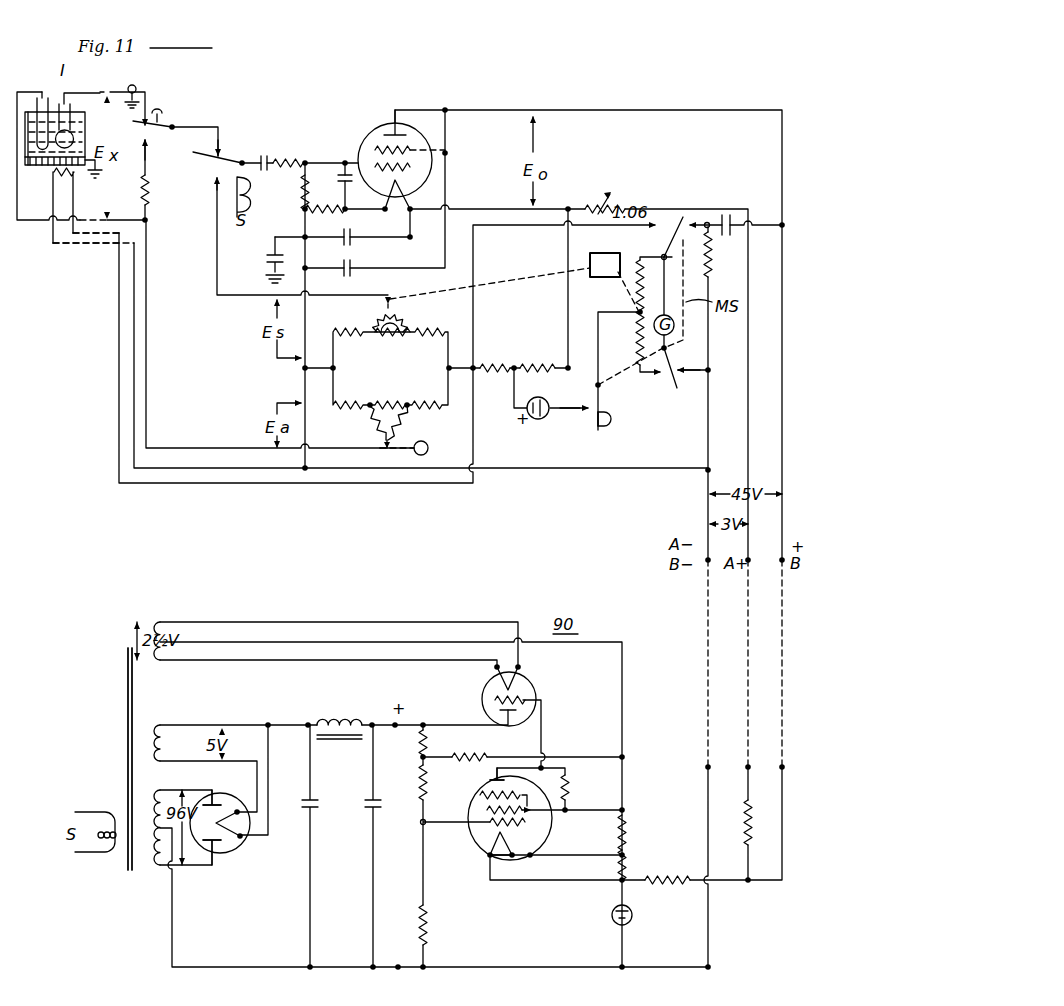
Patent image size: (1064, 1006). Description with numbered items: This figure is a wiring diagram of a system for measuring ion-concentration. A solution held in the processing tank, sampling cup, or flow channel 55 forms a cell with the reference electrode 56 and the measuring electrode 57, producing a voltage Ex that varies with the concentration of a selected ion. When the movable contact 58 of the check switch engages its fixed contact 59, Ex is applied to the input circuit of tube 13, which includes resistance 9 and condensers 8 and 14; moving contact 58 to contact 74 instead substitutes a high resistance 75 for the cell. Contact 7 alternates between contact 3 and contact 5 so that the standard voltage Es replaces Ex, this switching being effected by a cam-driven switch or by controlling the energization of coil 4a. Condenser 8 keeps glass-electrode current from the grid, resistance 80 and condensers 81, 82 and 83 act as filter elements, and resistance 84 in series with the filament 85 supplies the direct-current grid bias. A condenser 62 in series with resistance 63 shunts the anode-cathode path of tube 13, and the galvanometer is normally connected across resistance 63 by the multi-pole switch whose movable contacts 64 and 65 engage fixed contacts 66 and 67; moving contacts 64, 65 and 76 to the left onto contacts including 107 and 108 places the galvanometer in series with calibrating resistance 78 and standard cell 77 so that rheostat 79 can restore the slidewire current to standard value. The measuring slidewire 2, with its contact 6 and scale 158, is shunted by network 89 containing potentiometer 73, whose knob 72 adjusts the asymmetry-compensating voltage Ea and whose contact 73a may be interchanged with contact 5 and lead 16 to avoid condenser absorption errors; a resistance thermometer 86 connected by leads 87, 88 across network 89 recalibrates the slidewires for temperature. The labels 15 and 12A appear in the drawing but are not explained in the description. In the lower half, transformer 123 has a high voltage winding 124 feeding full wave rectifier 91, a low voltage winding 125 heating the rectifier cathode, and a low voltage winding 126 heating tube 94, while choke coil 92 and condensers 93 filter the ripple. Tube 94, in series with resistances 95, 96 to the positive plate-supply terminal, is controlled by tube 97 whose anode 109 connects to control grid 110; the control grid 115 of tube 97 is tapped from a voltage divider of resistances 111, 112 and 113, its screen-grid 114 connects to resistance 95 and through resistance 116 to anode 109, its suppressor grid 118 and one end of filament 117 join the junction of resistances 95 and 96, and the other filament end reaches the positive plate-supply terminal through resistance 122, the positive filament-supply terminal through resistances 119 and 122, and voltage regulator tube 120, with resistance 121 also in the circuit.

The processing tank, sampling cup, or flow channel 55 is at (38, 168).
The reference electrode 56 is at (43, 97).
The measuring electrode 57 is at (68, 103).
The conductor 15 is at (104, 92).
The lead 16 is at (136, 89).
The fixed contact of check switch 59 is at (148, 97).
The movable contact of check switch 58 is at (167, 119).
The contact of check switch 74 is at (147, 145).
The resistance 75 is at (149, 197).
The contact 3 is at (221, 142).
The contact 7 is at (217, 152).
The condenser 8 is at (269, 151).
The resistance 80 is at (290, 150).
The contact 5 is at (217, 185).
The coil 4a is at (253, 197).
The resistance 9 is at (300, 186).
The resistance 84 is at (312, 212).
The condenser 81 is at (345, 196).
The condenser 82 is at (362, 230).
The condenser 83 is at (352, 270).
The condenser 14 is at (273, 253).
The tube 13 is at (374, 132).
The cathode (filament) 85 is at (400, 188).
The rheostat 79 is at (613, 201).
The fixed contact of switch MS 66 is at (697, 222).
The condenser 62 is at (734, 222).
The movable contact of switch MS 64 is at (664, 254).
The resistance 63 is at (709, 266).
The motor 12A is at (606, 248).
The contact of switch MS 107 is at (643, 376).
The movable contact of switch MS 65 is at (672, 388).
The fixed contact of switch MS 67 is at (691, 359).
The movable contact of switch MS 76 is at (604, 411).
The contact of switch MS 108 is at (566, 402).
The standard cell 77 is at (545, 419).
The calibrating resistance 78 is at (500, 366).
The network 89 is at (402, 376).
The measuring slidewire 2 is at (405, 318).
The contact of slidewire 2 6 is at (380, 312).
The scale 158 is at (397, 333).
The potentiometer (slidewire) 73 is at (398, 424).
The contact of slidewire 73 73a is at (389, 444).
The knob 72 is at (428, 448).
The resistance thermometer 86 is at (70, 176).
The lead 87 is at (104, 244).
The lead 88 is at (113, 236).
The low voltage winding 126 is at (147, 636).
The low voltage winding 125 is at (161, 745).
The high voltage winding 124 is at (158, 795).
The transformer 123 is at (108, 756).
The full wave rectifier 91 is at (228, 846).
The choke coil 92 is at (343, 720).
The condensers 93 is at (370, 808).
The tube 94 is at (535, 676).
The control grid of tube 94 110 is at (525, 701).
The resistance 111 is at (420, 745).
The resistance 121 is at (473, 747).
The resistance 112 is at (420, 782).
The resistance 113 is at (420, 925).
The tube 97 is at (480, 862).
The anode of tube 97 109 is at (496, 780).
The resistance 116 is at (568, 795).
The suppressor grid 118 is at (480, 795).
The screen-grid 114 is at (486, 810).
The control grid of tube 97 115 is at (492, 824).
The filament 117 is at (488, 856).
The resistance 95 is at (630, 827).
The resistance 96 is at (630, 868).
The voltage regulator tube 120 is at (632, 915).
The resistance 122 is at (668, 883).
The resistance 119 is at (746, 822).